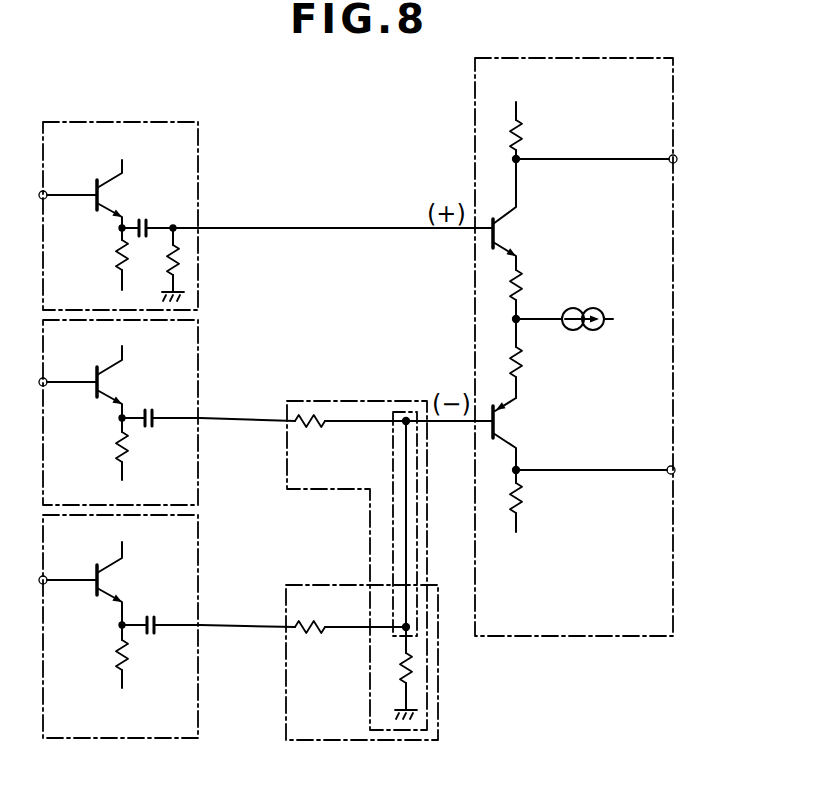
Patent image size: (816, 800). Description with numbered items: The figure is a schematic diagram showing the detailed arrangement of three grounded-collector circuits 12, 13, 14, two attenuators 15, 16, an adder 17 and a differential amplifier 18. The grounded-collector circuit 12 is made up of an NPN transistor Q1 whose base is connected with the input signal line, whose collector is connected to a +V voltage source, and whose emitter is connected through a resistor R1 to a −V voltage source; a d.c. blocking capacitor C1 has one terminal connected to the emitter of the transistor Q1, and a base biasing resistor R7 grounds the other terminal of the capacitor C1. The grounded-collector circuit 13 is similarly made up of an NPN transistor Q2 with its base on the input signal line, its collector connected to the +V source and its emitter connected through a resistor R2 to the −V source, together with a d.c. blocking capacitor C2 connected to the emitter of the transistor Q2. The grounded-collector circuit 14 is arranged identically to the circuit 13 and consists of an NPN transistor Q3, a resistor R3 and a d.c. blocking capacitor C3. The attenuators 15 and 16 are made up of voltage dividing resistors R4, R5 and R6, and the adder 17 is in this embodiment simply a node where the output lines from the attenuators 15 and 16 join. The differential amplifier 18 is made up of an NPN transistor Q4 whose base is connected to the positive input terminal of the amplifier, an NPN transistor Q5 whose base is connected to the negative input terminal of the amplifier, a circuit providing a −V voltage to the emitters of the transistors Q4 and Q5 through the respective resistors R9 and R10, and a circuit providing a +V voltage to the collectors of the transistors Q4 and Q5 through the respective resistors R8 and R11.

The grounded-collector circuit 12 is at (200, 138).
The grounded-collector circuit 13 is at (200, 362).
The grounded-collector circuit 14 is at (200, 553).
The attenuator 15 is at (341, 401).
The attenuator 16 is at (321, 585).
The adder 17 is at (407, 412).
The differential amplifier 18 is at (674, 114).
The NPN transistor Q1 is at (88, 178).
The NPN transistor Q2 is at (88, 370).
The NPN transistor Q3 is at (86, 571).
The NPN transistor Q4 is at (528, 214).
The NPN transistor Q5 is at (523, 434).
The resistor R1 is at (100, 270).
The resistor R2 is at (95, 460).
The resistor R3 is at (100, 671).
The voltage dividing resistor R4 is at (304, 415).
The voltage dividing resistor R5 is at (349, 611).
The voltage dividing resistor R6 is at (395, 672).
The base biasing resistor R7 is at (184, 267).
The resistor R8 is at (538, 130).
The resistor R9 is at (537, 294).
The resistor R10 is at (545, 358).
The resistor R11 is at (537, 518).
The d.c. blocking capacitor C1 is at (143, 218).
The d.c. blocking capacitor C2 is at (148, 405).
The d.c. blocking capacitor C3 is at (150, 612).